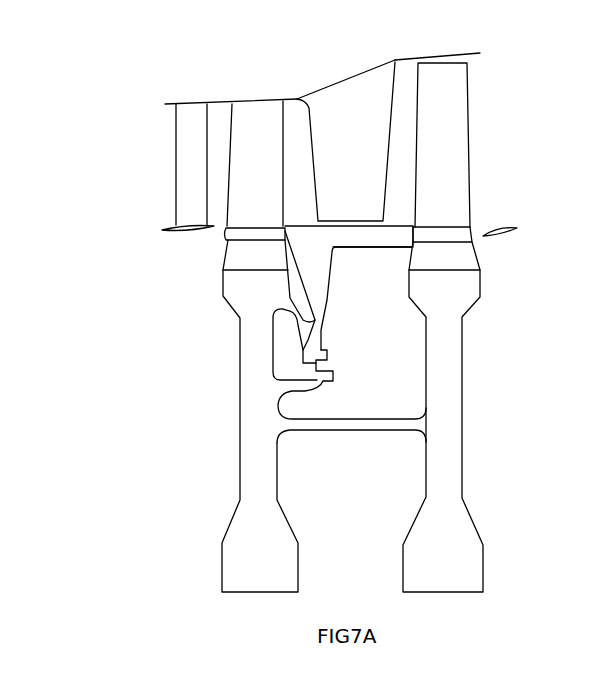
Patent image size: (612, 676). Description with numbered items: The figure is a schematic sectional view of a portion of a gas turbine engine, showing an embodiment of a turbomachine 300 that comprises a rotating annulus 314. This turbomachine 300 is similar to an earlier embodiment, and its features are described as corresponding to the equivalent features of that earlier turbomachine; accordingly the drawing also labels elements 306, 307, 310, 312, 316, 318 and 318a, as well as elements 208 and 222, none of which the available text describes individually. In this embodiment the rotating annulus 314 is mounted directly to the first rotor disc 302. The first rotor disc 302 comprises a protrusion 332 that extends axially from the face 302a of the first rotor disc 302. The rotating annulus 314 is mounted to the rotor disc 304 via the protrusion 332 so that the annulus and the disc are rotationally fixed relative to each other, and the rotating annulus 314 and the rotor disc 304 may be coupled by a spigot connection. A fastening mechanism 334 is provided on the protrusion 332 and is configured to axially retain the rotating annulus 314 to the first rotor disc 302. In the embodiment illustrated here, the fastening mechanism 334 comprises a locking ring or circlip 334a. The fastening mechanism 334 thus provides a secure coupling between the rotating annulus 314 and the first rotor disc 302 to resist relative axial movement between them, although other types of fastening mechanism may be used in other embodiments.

The turbomachine 300 is at (84, 87).
The rotor disc 304 is at (257, 101).
The slanted wall 306 is at (286, 108).
The top wall 307 is at (418, 55).
The vane 310 is at (467, 100).
The platform plate 316 is at (388, 225).
The vane 318 is at (176, 162).
The vane tip blade 318a is at (190, 229).
The winglet 222 is at (503, 235).
The rotating annulus 314 is at (364, 255).
The inner body 312 is at (393, 328).
The locking ring or circlip 334a is at (305, 365).
The fastening mechanism 334 is at (341, 362).
The rotor shank 208 is at (465, 352).
The first rotor disc 302 is at (240, 430).
The protrusion 332 is at (307, 392).
The face of the first rotor disc 302a is at (277, 452).